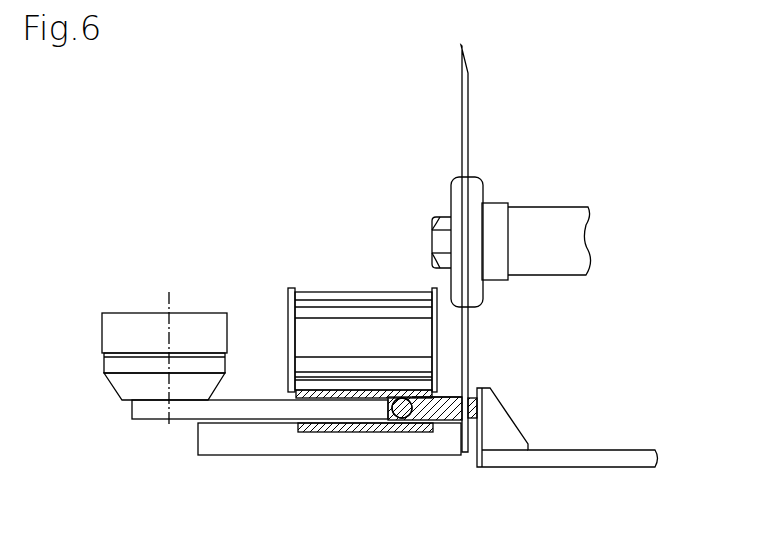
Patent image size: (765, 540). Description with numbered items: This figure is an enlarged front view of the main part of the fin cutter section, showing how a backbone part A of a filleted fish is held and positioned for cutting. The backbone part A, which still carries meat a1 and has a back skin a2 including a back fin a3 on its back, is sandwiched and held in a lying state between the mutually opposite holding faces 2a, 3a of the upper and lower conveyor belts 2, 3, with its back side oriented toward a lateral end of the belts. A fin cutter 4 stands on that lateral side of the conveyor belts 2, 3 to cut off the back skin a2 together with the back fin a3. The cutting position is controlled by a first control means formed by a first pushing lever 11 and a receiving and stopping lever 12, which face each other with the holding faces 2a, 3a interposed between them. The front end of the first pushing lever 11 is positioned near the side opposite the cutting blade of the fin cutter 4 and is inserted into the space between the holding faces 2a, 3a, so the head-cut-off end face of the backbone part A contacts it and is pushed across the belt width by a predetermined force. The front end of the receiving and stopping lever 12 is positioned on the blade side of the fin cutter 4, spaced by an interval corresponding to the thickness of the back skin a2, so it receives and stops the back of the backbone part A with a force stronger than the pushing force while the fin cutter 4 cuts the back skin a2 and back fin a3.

The upper conveyor belt 2 is at (313, 390).
The holding face of the upper conveyor belt 2a is at (315, 398).
The lower conveyor belt 3 is at (335, 427).
The holding face of the lower conveyor belt 3a is at (349, 430).
The fin cutter 4 is at (462, 115).
The first pushing lever 11 is at (233, 408).
The receiving and stopping lever 12 is at (607, 455).
The backbone part A is at (442, 428).
The meat a1 is at (455, 400).
The back skin a2 is at (478, 403).
The back fin a3 is at (481, 411).